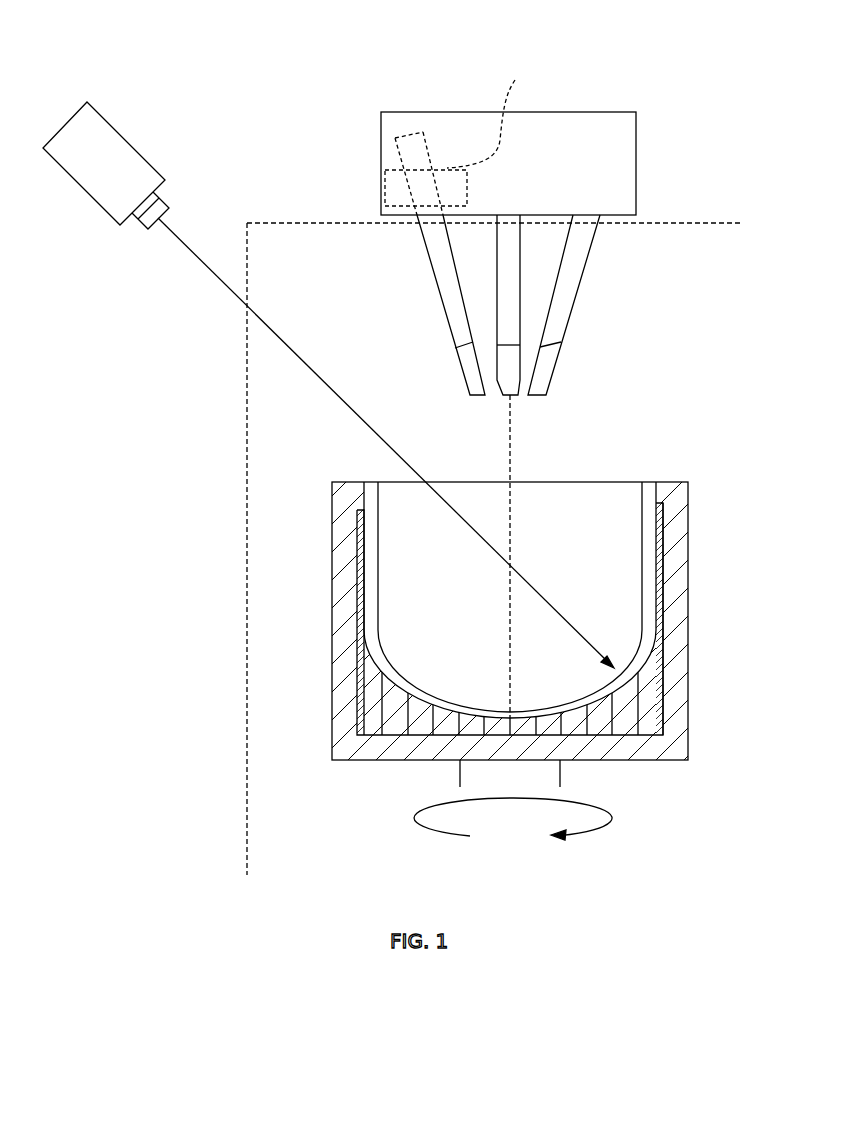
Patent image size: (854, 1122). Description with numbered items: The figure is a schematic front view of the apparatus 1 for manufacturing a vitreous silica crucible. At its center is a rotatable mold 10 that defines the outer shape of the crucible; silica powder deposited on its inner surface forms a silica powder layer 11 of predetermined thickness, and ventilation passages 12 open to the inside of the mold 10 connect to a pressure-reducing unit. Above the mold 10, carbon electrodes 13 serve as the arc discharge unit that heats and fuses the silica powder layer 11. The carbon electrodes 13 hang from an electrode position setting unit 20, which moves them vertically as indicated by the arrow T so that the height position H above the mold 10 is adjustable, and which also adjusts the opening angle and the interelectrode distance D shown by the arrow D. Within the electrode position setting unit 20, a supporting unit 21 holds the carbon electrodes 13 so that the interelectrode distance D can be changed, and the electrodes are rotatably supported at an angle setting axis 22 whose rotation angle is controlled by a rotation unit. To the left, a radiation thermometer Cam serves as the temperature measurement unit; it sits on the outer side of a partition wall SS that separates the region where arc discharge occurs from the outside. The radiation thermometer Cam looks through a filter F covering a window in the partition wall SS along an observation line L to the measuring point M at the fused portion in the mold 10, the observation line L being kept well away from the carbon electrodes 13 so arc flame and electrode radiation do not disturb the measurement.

The apparatus for manufacturing a vitreous silica crucible 1 is at (268, 66).
The mold 10 is at (688, 745).
The silica powder layer 11 is at (362, 633).
The ventilation passages 12 is at (358, 586).
The carbon electrodes 13 is at (427, 250).
The electrode position setting unit 20 is at (636, 150).
The supporting unit 21 is at (467, 137).
The angle setting axis 22 is at (385, 183).
The radiation thermometer Cam is at (82, 188).
The observation line L is at (315, 380).
The filter F is at (242, 318).
The partition wall SS is at (245, 720).
The arrow T is at (398, 293).
The height position H is at (479, 396).
The interelectrode distance D is at (524, 556).
The measuring point M is at (622, 658).